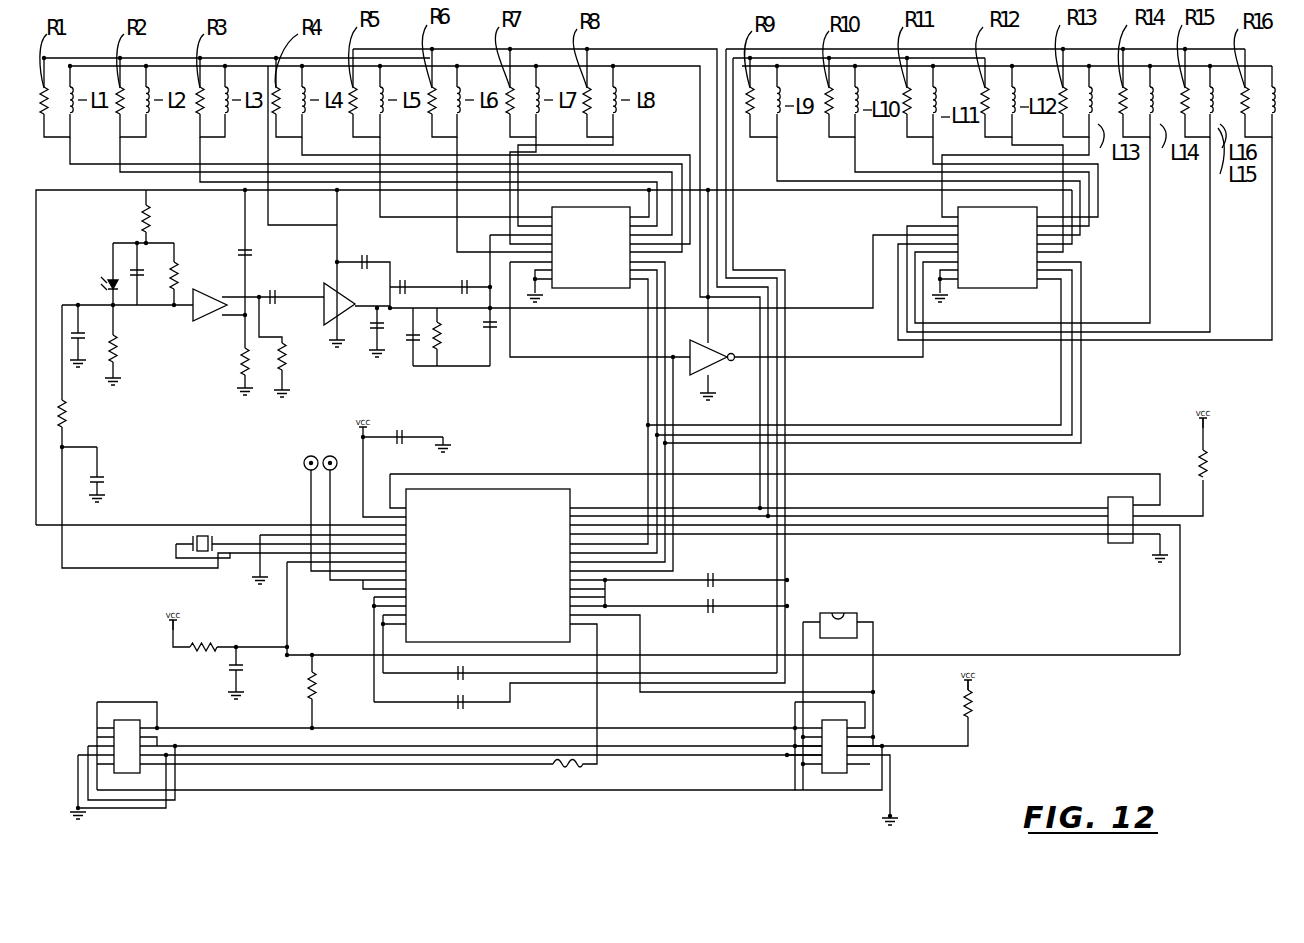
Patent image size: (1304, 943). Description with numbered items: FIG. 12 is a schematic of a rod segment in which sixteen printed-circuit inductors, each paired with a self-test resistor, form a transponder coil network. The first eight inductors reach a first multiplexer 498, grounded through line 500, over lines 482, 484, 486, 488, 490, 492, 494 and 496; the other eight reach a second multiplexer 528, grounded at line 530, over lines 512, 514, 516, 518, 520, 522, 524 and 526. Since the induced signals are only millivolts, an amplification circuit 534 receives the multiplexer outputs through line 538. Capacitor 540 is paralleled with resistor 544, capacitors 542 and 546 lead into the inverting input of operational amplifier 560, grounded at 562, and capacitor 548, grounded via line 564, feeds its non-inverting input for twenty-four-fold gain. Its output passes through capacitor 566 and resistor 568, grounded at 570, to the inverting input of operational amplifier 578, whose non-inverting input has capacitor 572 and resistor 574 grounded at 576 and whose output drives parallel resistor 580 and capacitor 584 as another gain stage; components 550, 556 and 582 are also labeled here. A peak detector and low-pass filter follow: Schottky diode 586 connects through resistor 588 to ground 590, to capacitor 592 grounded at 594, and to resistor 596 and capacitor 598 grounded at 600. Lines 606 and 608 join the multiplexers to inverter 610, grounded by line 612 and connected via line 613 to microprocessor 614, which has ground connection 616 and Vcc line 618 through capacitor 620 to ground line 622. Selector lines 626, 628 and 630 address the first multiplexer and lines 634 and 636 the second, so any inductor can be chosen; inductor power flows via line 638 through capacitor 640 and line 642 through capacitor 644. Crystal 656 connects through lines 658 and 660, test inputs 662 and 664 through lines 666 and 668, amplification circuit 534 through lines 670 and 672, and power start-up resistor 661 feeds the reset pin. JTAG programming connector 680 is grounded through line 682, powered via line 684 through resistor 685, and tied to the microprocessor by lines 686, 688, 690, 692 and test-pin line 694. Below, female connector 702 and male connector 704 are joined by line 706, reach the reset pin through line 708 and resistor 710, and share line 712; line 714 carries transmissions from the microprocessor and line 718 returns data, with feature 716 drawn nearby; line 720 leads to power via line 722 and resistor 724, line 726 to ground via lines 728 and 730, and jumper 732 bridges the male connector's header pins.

The line 482 is at (80, 149).
The line 484 is at (130, 148).
The line 486 is at (205, 149).
The line 488 is at (270, 209).
The line 490 is at (310, 146).
The line 492 is at (386, 146).
The line 494 is at (462, 146).
The line 496 is at (511, 200).
The first multiplexer 498 is at (590, 145).
The line 500 is at (543, 297).
The line 512 is at (780, 150).
The line 514 is at (854, 166).
The line 516 is at (927, 148).
The line 518 is at (1016, 118).
The line 520 is at (990, 156).
The line 522 is at (1160, 187).
The line 524 is at (1208, 220).
The line 526 is at (1270, 205).
The second multiplexer 528 is at (958, 210).
The line 530 is at (950, 296).
The amplification circuit 534 is at (49, 200).
The line 538 is at (812, 308).
The capacitor 540 is at (438, 342).
The capacitor 542 is at (470, 282).
The resistor 544 is at (446, 334).
The capacitor 546 is at (402, 282).
The capacitor 548 is at (410, 344).
The capacitor 550 is at (364, 258).
The conductor 556 is at (490, 236).
The operational amplifier 560 is at (336, 296).
The ground 562 is at (336, 330).
The line 564 is at (372, 364).
The capacitor 566 is at (270, 291).
The resistor 568 is at (268, 387).
The ground 570 is at (278, 398).
The capacitor 572 is at (242, 234).
The resistor 574 is at (240, 356).
The ground 576 is at (238, 380).
The operational amplifier 578 is at (194, 289).
The resistor 580 is at (180, 262).
The resistor 582 is at (142, 210).
The capacitor 584 is at (140, 294).
The Schottky diode 586 is at (108, 280).
The resistor 588 is at (118, 347).
The ground 590 is at (118, 371).
The capacitor 592 is at (86, 362).
The ground 594 is at (80, 385).
The resistor 596 is at (82, 440).
The capacitor 598 is at (106, 471).
The ground 600 is at (112, 488).
The line 606 is at (560, 361).
The line 608 is at (824, 357).
The inverter 610 is at (712, 352).
The line 612 is at (718, 378).
The line 613 is at (680, 551).
The microprocessor 614 is at (506, 489).
The ground 616 is at (294, 531).
The line 618 is at (365, 460).
The capacitor 620 is at (394, 434).
The line 622 is at (437, 443).
The line 626 is at (646, 416).
The line 628 is at (654, 399).
The line 630 is at (658, 381).
The line 634 is at (924, 426).
The line 636 is at (872, 423).
The line 638 is at (638, 582).
The capacitor 640 is at (720, 582).
The line 642 is at (658, 614).
The capacitor 644 is at (724, 612).
The crystal 656 is at (218, 530).
The line 658 is at (236, 526).
The line 660 is at (216, 572).
The power start-up resistor 661 is at (202, 640).
The test input 662 is at (303, 463).
The test input 664 is at (330, 446).
The line 666 is at (350, 580).
The line 668 is at (365, 594).
The line 670 is at (128, 516).
The line 672 is at (102, 568).
The JTAG programming connector 680 is at (1110, 496).
The ground 682 is at (1156, 552).
The line 684 is at (1202, 517).
The resistor 685 is at (1194, 455).
The line 686 is at (848, 506).
The line 688 is at (916, 512).
The line 690 is at (984, 522).
The line 692 is at (1000, 536).
The line 694 is at (920, 474).
The female connector component 702 is at (122, 718).
The male connector component 704 is at (830, 774).
The line 706 is at (380, 723).
The line 708 is at (305, 712).
The resistor 710 is at (306, 680).
The line 712 is at (350, 792).
The line 714 is at (395, 765).
The crossover 716 is at (576, 765).
The line 718 is at (712, 694).
The line 720 is at (200, 749).
The line 722 is at (960, 748).
The resistor 724 is at (972, 707).
The line 726 is at (287, 755).
The line 728 is at (88, 818).
The line 730 is at (906, 790).
The female jumper component 732 is at (848, 614).